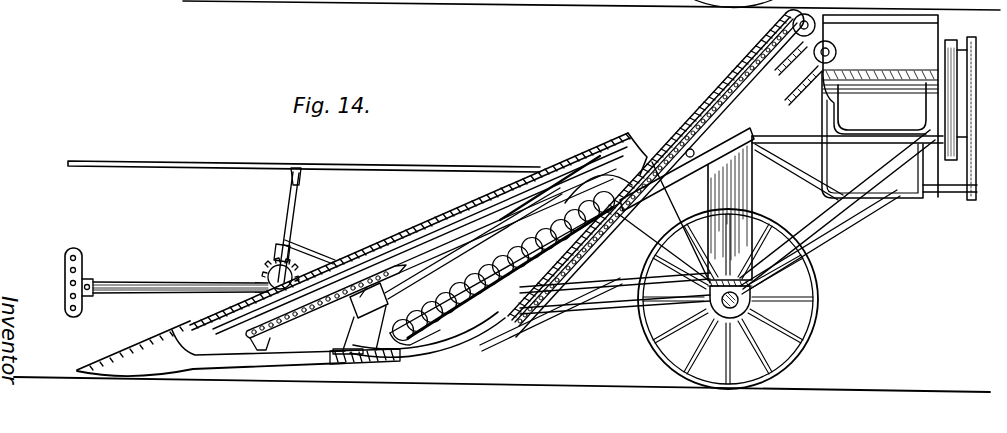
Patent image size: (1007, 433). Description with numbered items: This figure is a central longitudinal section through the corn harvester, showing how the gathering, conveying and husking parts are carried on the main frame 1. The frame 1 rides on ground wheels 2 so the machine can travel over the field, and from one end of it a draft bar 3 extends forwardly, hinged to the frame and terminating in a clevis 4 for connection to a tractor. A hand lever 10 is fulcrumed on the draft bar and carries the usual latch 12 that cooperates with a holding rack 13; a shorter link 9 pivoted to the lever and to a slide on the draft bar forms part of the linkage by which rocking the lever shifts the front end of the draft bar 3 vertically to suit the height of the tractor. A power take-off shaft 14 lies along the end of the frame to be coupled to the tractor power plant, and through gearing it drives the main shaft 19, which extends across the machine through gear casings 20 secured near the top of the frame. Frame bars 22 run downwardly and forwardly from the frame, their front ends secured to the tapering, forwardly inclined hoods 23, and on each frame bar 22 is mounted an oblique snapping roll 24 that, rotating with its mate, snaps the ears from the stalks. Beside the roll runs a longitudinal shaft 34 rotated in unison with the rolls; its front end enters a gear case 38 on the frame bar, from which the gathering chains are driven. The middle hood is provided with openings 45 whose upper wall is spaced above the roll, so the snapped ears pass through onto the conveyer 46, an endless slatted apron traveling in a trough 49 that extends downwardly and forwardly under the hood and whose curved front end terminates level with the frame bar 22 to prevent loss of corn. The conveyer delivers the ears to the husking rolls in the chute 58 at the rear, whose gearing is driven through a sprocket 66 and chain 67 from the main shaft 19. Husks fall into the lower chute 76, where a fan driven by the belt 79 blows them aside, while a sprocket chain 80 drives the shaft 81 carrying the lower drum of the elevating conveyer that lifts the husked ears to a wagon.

The frame 1 is at (750, 193).
The ground wheels 2 is at (818, 310).
The draft bar 3 is at (157, 282).
The clevis 4 is at (84, 263).
The shorter link 9 is at (316, 250).
The hand lever 10 is at (297, 208).
The latch 12 is at (326, 299).
The holding rack 13 is at (262, 270).
The power take-off shaft 14 is at (212, 162).
The main shaft 19 is at (689, 160).
The gear casings 20 is at (703, 143).
The frame bars 22 is at (303, 357).
The hoods 23 is at (447, 207).
The snapping roll 24 is at (447, 300).
The longitudinal shaft 34 is at (481, 260).
The gear case 38 is at (338, 307).
The openings 45 is at (565, 202).
The conveyer 46 is at (677, 133).
The trough 49 is at (463, 348).
The chute 58 is at (910, 47).
The sprocket 66 is at (838, 52).
The chain 67 is at (798, 86).
The lower chute 76 is at (903, 178).
The belt 79 is at (950, 112).
The sprocket chain 80 is at (970, 205).
The shaft 81 is at (947, 192).